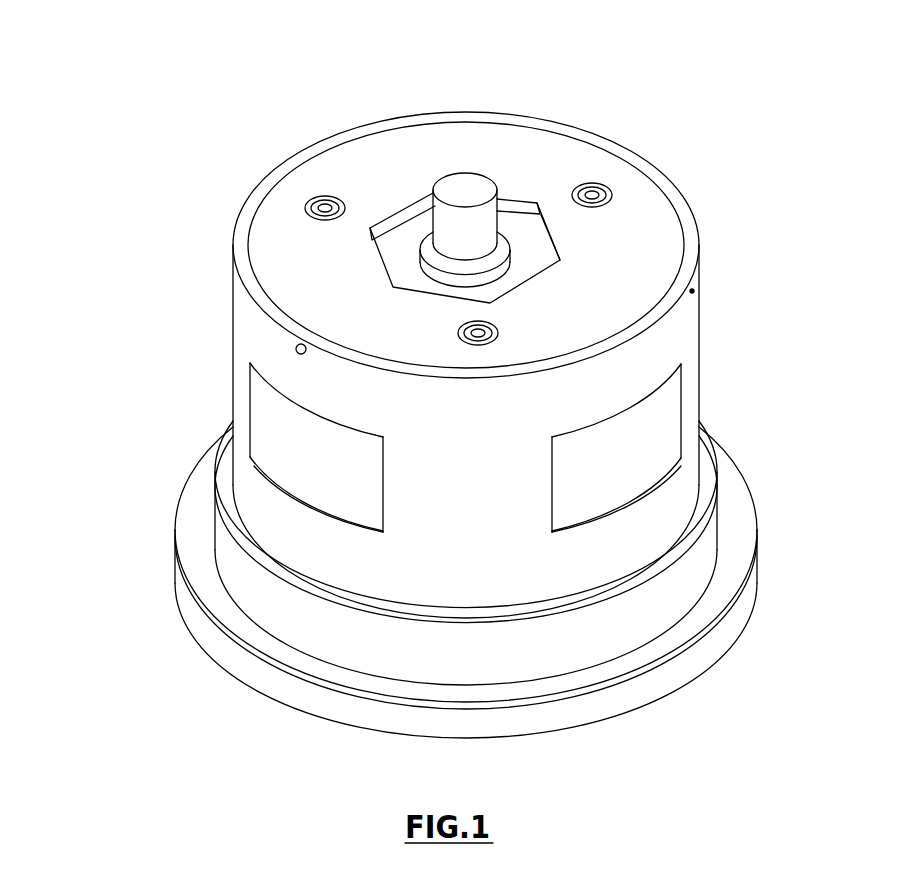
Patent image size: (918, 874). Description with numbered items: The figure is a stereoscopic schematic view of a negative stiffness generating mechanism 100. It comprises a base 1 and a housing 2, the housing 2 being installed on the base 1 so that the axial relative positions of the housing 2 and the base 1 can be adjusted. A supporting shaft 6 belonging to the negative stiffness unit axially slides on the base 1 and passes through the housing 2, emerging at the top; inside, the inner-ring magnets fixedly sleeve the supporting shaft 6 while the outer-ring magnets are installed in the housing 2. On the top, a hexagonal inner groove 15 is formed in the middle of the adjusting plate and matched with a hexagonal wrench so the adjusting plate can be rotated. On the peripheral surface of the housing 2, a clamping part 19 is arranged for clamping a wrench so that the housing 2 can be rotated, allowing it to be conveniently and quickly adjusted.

The negative stiffness generating mechanism 100 is at (200, 132).
The base 1 is at (222, 648).
The housing 2 is at (250, 336).
The supporting shaft 6 is at (477, 223).
The hexagonal inner groove 15 is at (402, 247).
The clamping part 19 is at (630, 440).